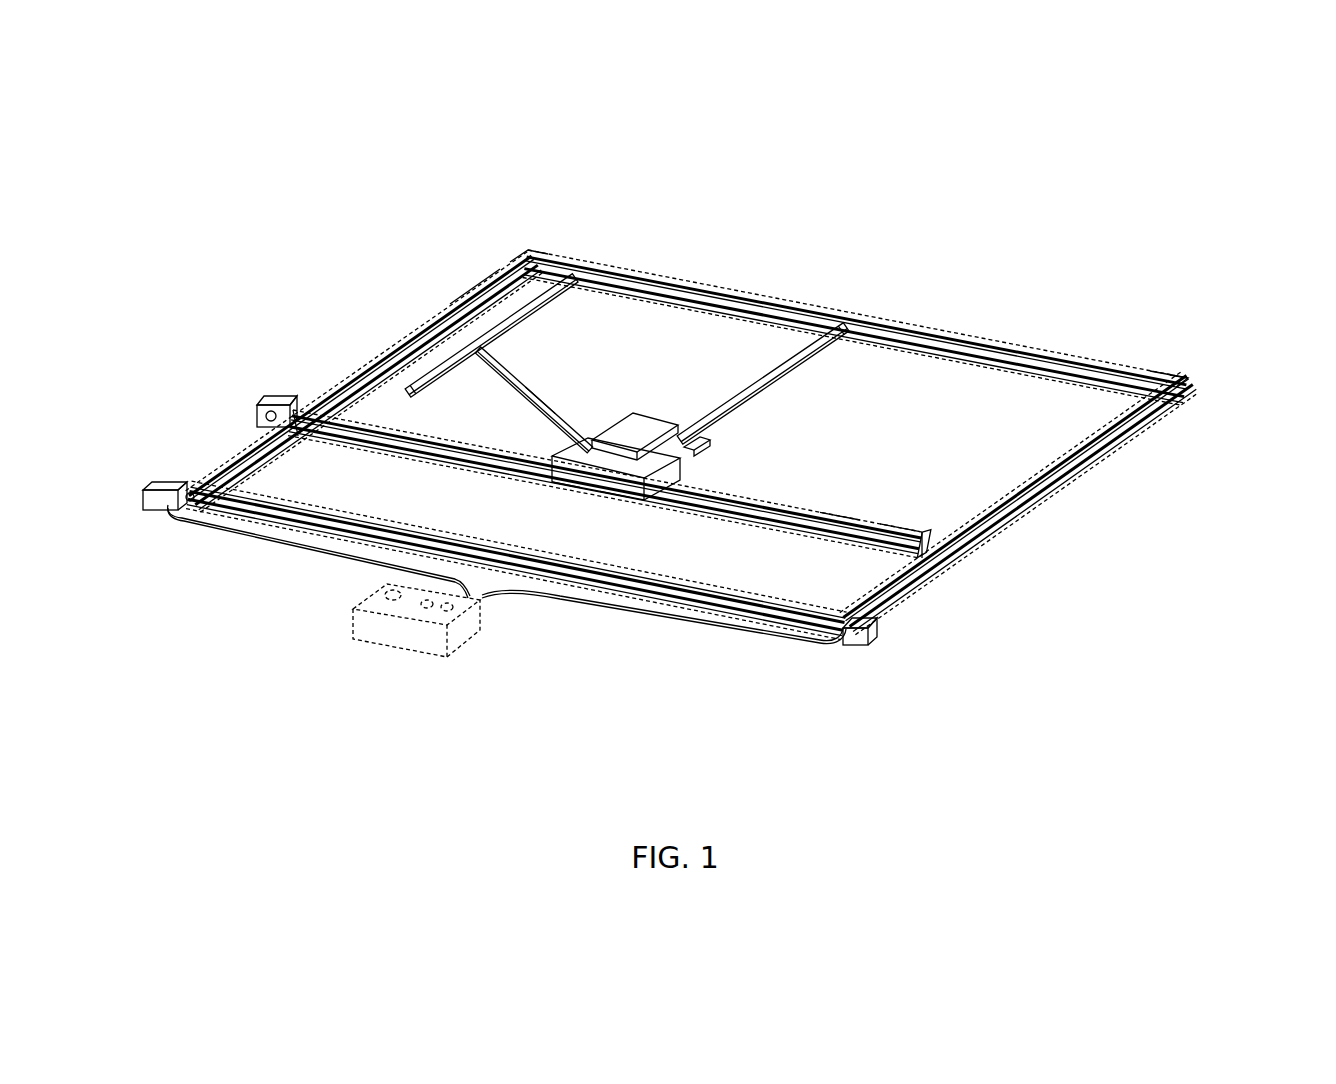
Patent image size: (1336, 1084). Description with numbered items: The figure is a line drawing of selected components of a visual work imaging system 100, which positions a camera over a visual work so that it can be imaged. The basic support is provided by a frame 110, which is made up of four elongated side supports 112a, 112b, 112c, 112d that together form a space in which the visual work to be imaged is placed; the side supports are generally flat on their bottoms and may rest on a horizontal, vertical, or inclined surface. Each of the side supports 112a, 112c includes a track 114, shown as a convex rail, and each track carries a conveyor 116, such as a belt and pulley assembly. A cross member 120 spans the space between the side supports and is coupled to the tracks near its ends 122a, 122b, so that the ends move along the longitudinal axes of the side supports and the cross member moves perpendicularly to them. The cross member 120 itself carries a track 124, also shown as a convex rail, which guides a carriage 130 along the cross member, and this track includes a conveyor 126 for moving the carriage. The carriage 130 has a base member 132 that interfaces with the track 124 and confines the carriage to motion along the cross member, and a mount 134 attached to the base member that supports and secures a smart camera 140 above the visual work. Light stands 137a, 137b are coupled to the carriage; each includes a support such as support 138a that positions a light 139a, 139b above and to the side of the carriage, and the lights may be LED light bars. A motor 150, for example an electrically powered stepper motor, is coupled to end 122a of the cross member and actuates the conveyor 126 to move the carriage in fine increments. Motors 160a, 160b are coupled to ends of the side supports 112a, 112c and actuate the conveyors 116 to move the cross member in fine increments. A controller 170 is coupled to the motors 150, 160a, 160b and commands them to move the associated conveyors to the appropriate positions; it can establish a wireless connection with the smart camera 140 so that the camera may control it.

The imaging system 100 is at (1053, 198).
The frame 110 is at (1057, 487).
The side support 112a is at (983, 543).
The side support 112b is at (768, 290).
The side support 112c is at (395, 338).
The side support 112d is at (753, 610).
The track 114 is at (470, 285).
The conveyor 116 is at (528, 248).
The cross member 120 is at (807, 507).
The end of cross member 122a is at (300, 437).
The end of cross member 122b is at (893, 557).
The track 124 is at (897, 520).
The conveyor 126 is at (833, 507).
The carriage 130 is at (643, 483).
The base member 132 is at (563, 475).
The mount 134 is at (612, 478).
The light stand 137a is at (513, 397).
The light stand 137b is at (680, 443).
The support 138a is at (555, 413).
The light 139a is at (557, 300).
The light 139b is at (803, 363).
The smart camera 140 is at (663, 407).
The motor 150 is at (263, 397).
The motor 160a is at (153, 507).
The motor 160b is at (853, 650).
The controller 170 is at (400, 650).